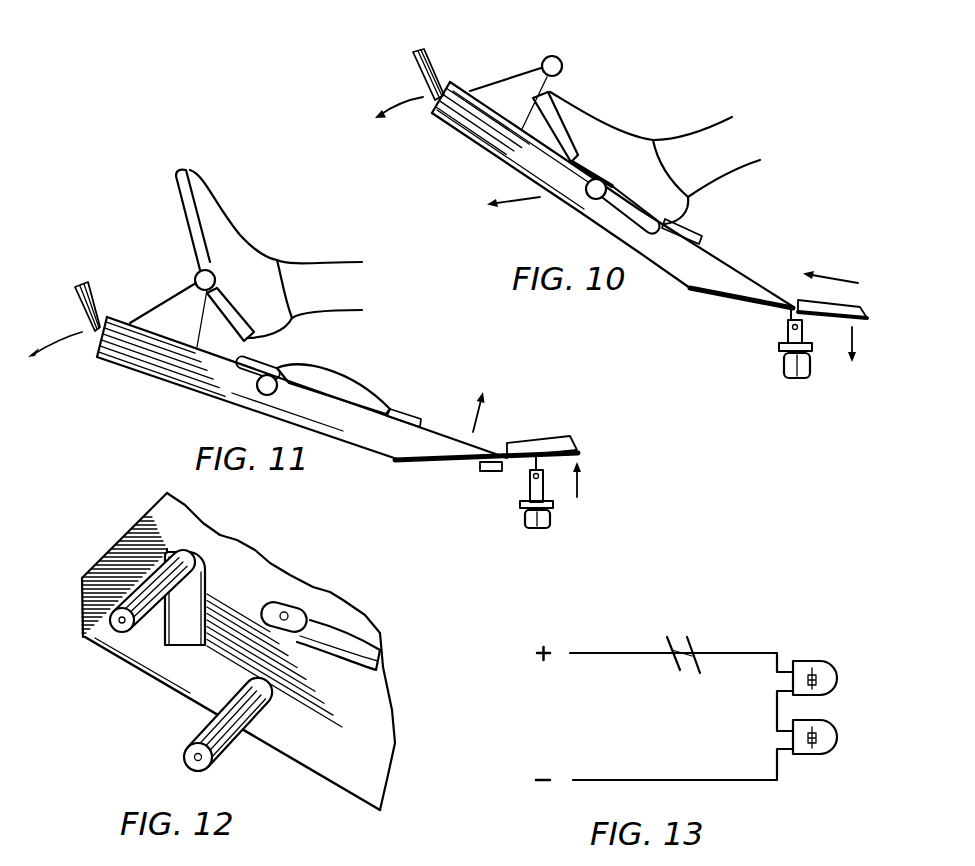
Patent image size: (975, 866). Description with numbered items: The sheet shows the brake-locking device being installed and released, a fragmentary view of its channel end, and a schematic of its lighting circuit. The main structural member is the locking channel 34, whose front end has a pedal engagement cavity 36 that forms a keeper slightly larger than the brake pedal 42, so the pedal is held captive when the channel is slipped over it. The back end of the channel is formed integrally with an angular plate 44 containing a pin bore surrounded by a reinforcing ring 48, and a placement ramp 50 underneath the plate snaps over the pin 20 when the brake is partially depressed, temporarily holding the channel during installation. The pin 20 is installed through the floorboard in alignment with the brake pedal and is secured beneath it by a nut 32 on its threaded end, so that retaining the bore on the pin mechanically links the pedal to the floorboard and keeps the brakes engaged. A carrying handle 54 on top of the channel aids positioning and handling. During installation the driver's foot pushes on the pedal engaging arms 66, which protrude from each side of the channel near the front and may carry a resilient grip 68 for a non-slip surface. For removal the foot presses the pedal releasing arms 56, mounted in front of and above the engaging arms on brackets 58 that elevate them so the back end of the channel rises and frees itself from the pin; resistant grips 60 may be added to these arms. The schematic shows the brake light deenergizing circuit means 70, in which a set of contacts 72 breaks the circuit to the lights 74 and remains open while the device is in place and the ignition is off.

In FIG. 10, the pin 20 is at (803, 334).
In FIG. 11, the pin 20 is at (545, 488).
In FIG. 10, the nut 32 is at (788, 374).
In FIG. 11, the nut 32 is at (527, 526).
In FIG. 10, the locking channel 34 is at (467, 137).
In FIG. 11, the locking channel 34 is at (137, 371).
In FIG. 12, the locking channel 34 is at (125, 533).
In FIG. 12, the pedal engagement cavity 36 is at (82, 597).
In FIG. 10, the brake pedal 42 is at (428, 86).
In FIG. 11, the brake pedal 42 is at (82, 282).
In FIG. 10, the angular plate 44 is at (707, 300).
In FIG. 11, the angular plate 44 is at (407, 470).
In FIG. 10, the reinforcing ring 48 is at (830, 302).
In FIG. 11, the reinforcing ring 48 is at (550, 440).
In FIG. 10, the placement ramp 50 is at (775, 318).
In FIG. 11, the placement ramp 50 is at (500, 474).
In FIG. 10, the carrying handle 54 is at (703, 236).
In FIG. 11, the carrying handle 54 is at (378, 355).
In FIG. 12, the carrying handle 54 is at (390, 648).
In FIG. 10, the pedal releasing arms 56 is at (557, 58).
In FIG. 11, the pedal releasing arms 56 is at (197, 270).
In FIG. 10, the brackets 58 is at (512, 72).
In FIG. 11, the brackets 58 is at (170, 296).
In FIG. 12, the brackets 58 is at (180, 630).
In FIG. 12, the resistant grips 60 is at (100, 643).
In FIG. 10, the pedal engaging arms 66 is at (580, 210).
In FIG. 11, the pedal engaging arms 66 is at (237, 400).
In FIG. 12, the resilient grip 68 is at (232, 748).
In FIG. 13, the brake light deenergizing circuit means 70 is at (690, 637).
In FIG. 13, the contacts 72 is at (677, 677).
In FIG. 13, the lights 74 is at (857, 627).